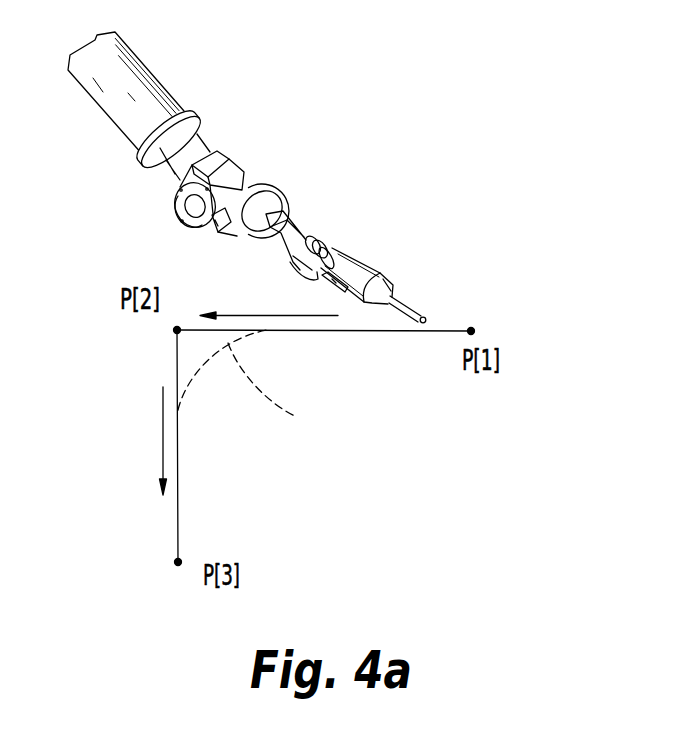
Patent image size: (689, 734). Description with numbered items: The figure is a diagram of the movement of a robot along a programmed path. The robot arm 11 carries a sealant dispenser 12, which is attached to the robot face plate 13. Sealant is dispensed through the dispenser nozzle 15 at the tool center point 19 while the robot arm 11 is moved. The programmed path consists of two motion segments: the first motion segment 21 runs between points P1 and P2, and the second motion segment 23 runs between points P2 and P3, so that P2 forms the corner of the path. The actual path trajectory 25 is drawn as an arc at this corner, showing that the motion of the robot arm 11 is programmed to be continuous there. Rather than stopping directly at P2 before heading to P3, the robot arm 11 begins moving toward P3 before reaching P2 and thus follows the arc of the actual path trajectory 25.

The robot arm 11 is at (173, 98).
The sealant dispenser 12 is at (370, 254).
The robot face plate 13 is at (260, 182).
The dispenser nozzle 15 is at (403, 306).
The tool center point 19 is at (427, 318).
The first motion segment 21 is at (310, 332).
The second motion segment 23 is at (177, 367).
The actual path trajectory 25 is at (256, 388).